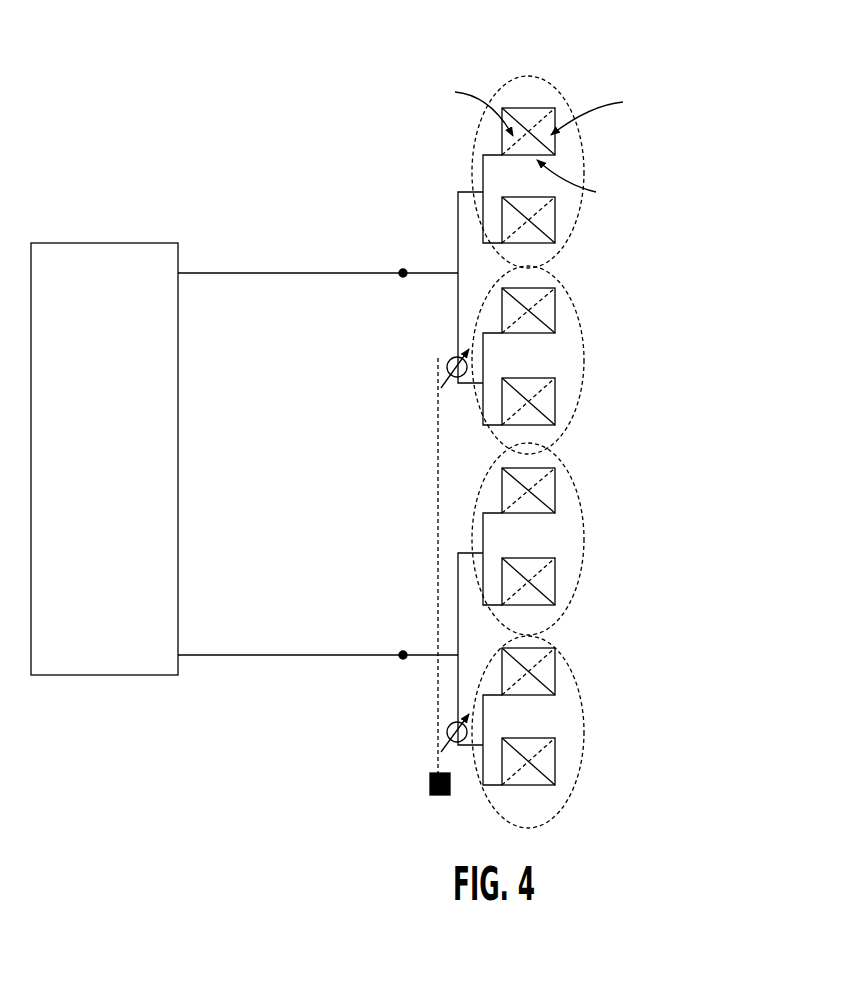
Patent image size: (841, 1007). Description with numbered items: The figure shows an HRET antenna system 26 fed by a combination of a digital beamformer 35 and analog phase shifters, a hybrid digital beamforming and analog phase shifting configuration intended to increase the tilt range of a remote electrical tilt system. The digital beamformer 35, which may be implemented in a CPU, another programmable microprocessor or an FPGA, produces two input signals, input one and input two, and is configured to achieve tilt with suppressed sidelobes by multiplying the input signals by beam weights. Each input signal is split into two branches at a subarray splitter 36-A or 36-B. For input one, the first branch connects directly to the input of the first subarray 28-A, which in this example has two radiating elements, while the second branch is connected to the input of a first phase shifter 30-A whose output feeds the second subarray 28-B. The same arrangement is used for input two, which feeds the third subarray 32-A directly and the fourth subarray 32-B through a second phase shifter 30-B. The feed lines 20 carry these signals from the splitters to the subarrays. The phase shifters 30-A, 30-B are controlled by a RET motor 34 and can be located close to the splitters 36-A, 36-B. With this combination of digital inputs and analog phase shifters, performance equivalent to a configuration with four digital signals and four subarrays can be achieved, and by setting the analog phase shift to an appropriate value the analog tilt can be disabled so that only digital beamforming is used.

The HRET antenna system 26 is at (545, 35).
The feed network 20 is at (475, 188).
The subarray 1 28-A is at (578, 228).
The subarray 2 28-B is at (585, 358).
The subarray 3 32-A is at (585, 536).
The subarray 4 32-B is at (585, 726).
The first phase shifter 30-A is at (443, 363).
The second phase shifter 30-B is at (448, 722).
The RET motor 34 is at (429, 780).
The digital beamformer 35 is at (111, 508).
The subarray splitter 36-A is at (456, 268).
The subarray splitter 36-B is at (457, 645).